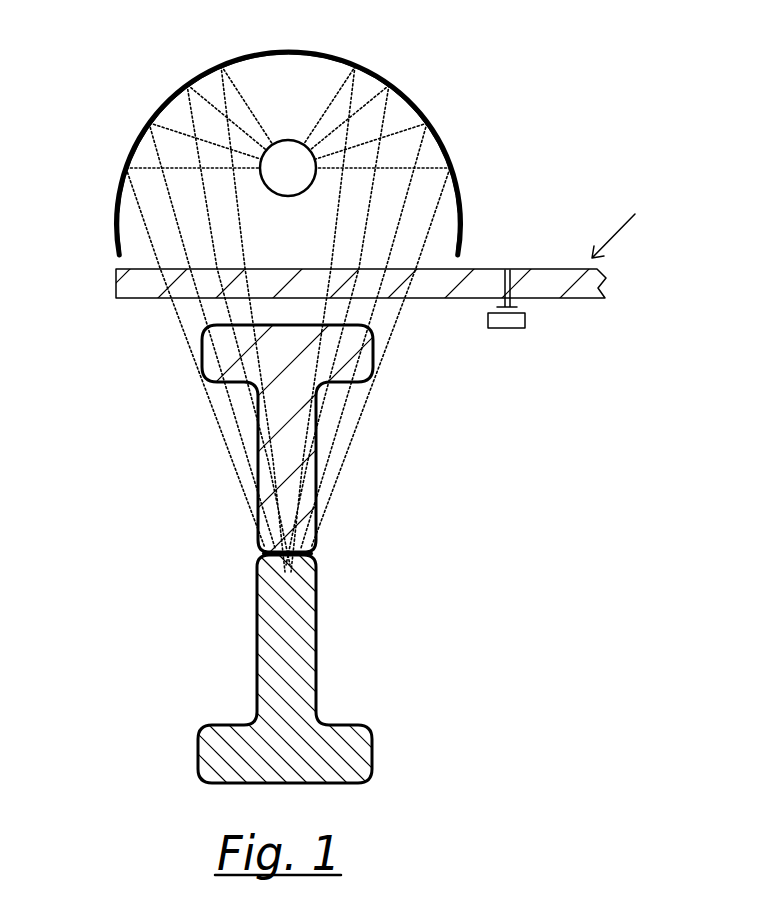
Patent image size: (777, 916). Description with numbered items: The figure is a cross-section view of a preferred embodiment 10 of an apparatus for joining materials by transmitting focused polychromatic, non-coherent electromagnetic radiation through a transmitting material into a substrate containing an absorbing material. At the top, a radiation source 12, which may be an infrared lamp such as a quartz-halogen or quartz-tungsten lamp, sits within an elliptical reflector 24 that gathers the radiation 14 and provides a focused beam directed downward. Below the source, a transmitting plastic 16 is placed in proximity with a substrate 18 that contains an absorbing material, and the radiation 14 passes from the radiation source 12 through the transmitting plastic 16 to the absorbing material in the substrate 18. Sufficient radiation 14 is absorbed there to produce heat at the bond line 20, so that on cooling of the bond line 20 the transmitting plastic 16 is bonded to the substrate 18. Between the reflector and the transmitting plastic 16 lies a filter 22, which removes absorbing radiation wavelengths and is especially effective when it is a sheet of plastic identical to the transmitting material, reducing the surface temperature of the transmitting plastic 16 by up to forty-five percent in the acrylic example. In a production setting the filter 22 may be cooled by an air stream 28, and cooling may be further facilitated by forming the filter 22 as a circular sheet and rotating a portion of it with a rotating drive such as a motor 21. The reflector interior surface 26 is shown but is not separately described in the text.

The preferred embodiment 10 is at (145, 68).
The radiation source 12 is at (288, 140).
The radiation 14 is at (334, 212).
The transmitting plastic 16 is at (362, 367).
The substrate 18 is at (295, 600).
The bond line 20 is at (312, 553).
The motor 21 is at (525, 322).
The filter 22 is at (487, 270).
The elliptical reflector 24 is at (447, 147).
The reflective inner surface 26 is at (367, 227).
The air stream 28 is at (612, 236).